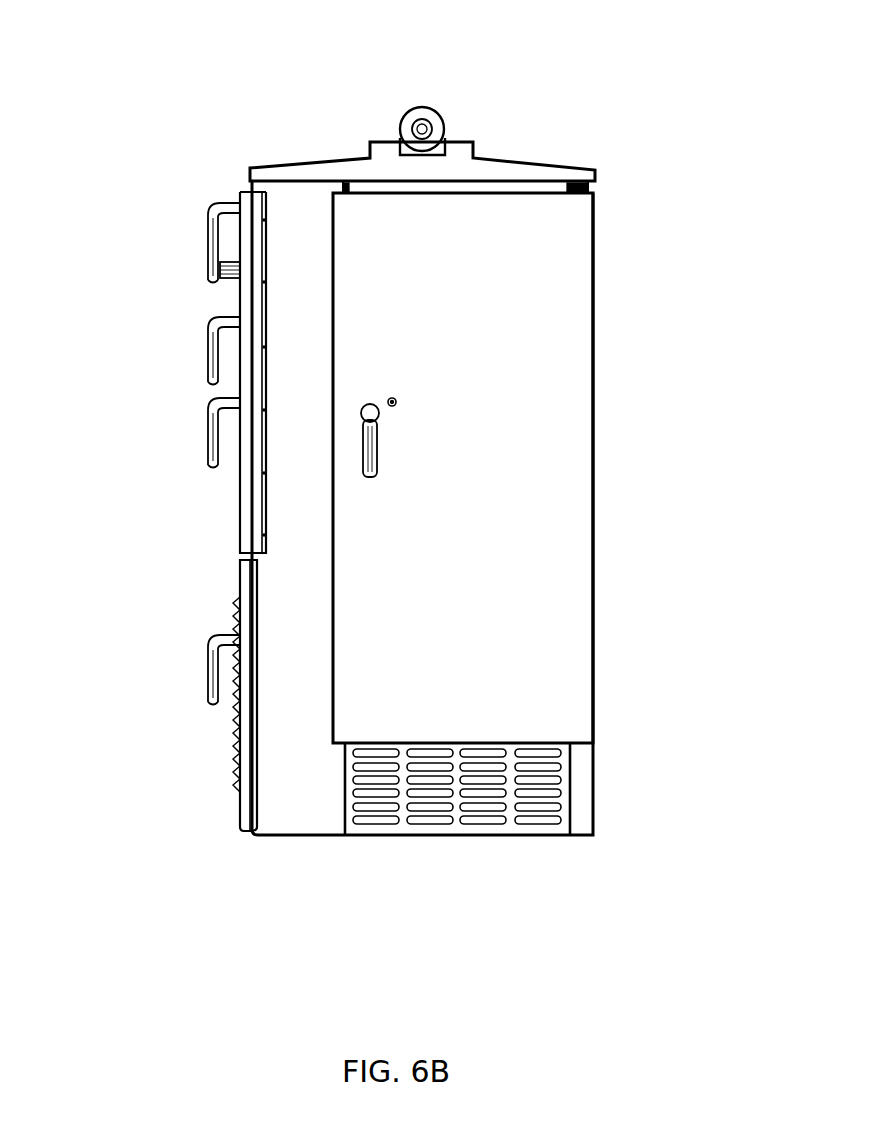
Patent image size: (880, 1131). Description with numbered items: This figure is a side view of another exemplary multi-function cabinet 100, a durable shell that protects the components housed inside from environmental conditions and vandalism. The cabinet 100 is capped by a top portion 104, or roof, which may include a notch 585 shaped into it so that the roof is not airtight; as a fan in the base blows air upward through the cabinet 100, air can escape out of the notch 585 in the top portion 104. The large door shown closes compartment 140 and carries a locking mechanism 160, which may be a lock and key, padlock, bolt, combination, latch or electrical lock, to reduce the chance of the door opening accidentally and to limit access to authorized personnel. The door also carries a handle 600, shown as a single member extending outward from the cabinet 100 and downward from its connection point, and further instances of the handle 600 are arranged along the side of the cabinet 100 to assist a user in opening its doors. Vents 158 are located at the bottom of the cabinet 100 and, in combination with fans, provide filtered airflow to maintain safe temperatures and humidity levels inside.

The multi-function cabinet 100 is at (152, 87).
The top portion 104 is at (530, 156).
The notch 585 is at (373, 140).
The compartment 140 is at (553, 305).
The locking mechanism 160 is at (406, 396).
The handle 600 is at (205, 263).
The vent 158 is at (565, 775).